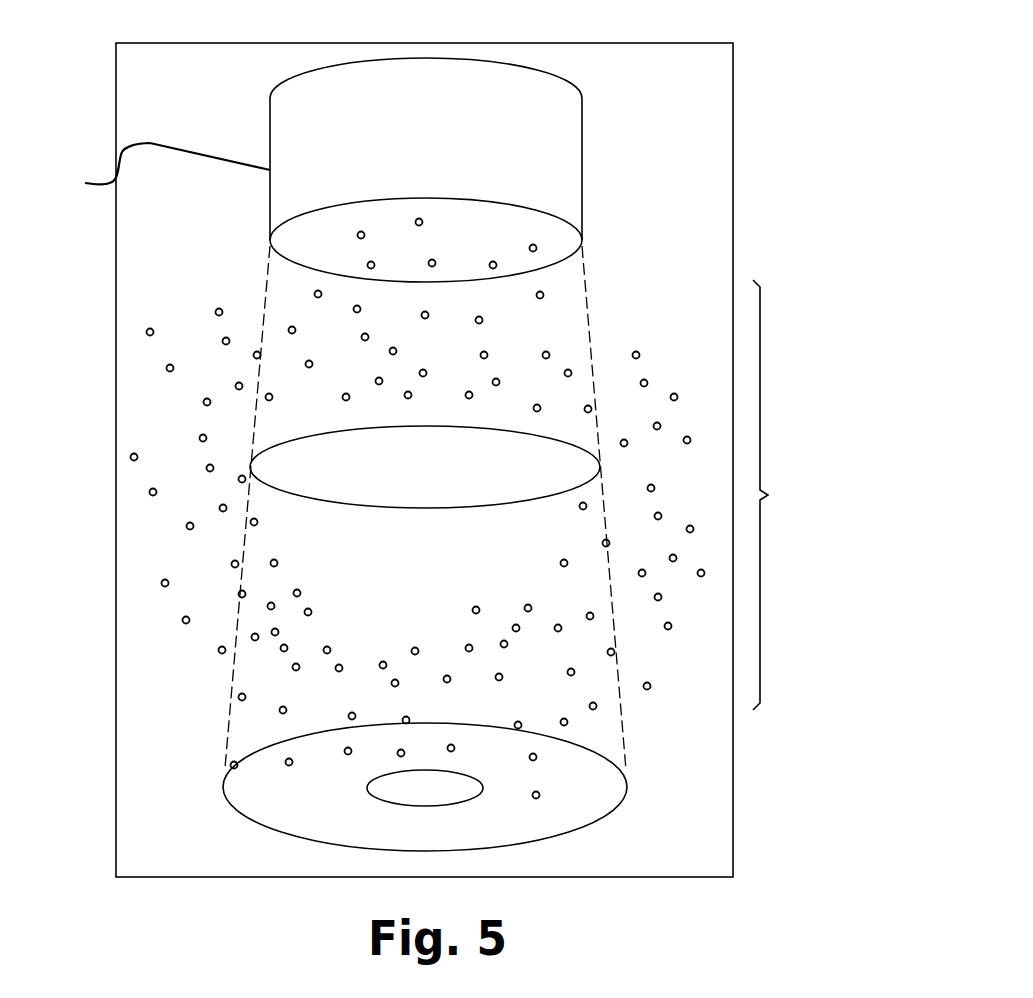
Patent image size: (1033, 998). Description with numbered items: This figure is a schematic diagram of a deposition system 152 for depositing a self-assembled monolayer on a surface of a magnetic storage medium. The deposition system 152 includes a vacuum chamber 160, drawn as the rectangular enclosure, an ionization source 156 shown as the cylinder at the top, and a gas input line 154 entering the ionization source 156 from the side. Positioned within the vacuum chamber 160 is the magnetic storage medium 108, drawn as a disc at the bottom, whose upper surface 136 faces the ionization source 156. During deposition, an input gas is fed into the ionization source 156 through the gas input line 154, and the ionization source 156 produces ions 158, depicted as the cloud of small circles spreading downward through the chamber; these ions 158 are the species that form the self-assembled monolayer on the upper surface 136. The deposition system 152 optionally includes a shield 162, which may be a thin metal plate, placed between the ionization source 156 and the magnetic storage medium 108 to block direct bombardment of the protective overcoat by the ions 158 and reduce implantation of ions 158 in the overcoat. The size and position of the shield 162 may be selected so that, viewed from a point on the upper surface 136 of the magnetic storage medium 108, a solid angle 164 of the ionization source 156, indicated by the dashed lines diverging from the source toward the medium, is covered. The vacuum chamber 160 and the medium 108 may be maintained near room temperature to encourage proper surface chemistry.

The deposition system 152 is at (746, 58).
The gas input line 154 is at (142, 142).
The ionization source 156 is at (444, 176).
The ions 158 is at (778, 495).
The vacuum chamber 160 is at (116, 447).
The shield 162 is at (275, 450).
The solid angle 164 is at (268, 272).
The upper surface 136 is at (579, 757).
The magnetic storage medium 108 is at (627, 788).